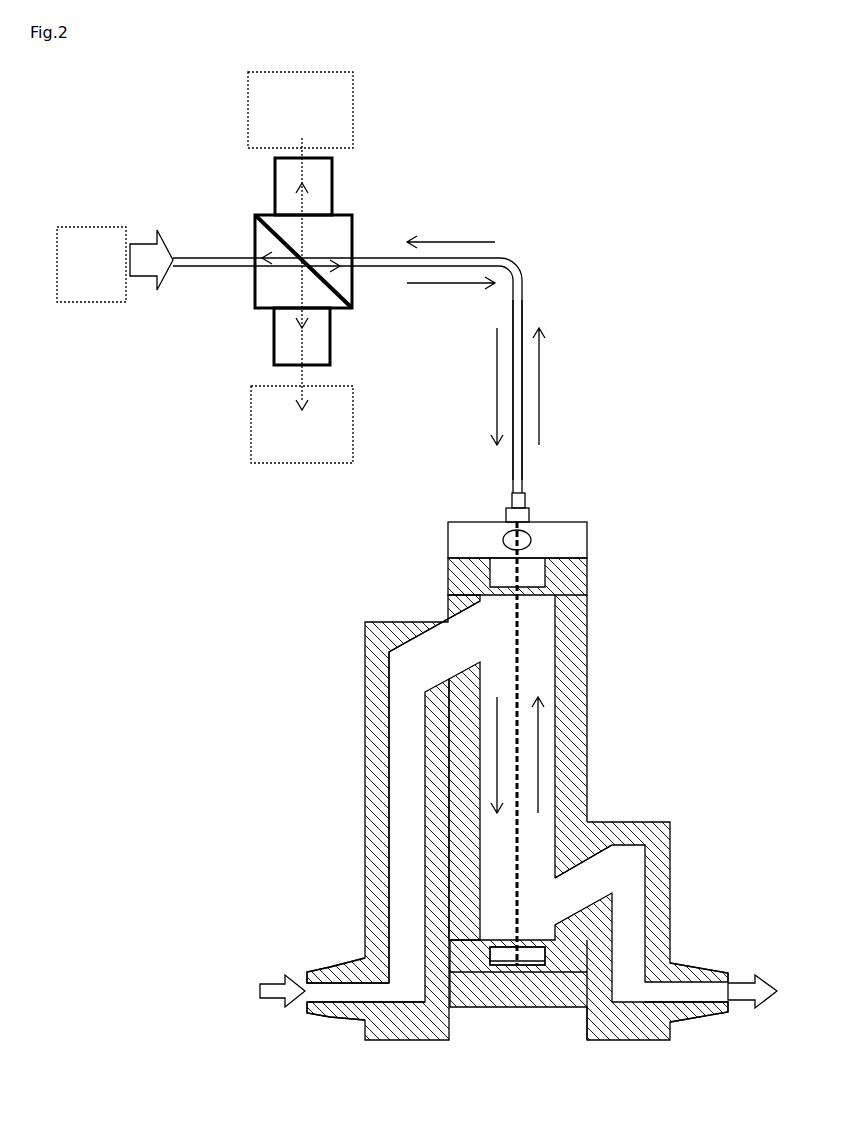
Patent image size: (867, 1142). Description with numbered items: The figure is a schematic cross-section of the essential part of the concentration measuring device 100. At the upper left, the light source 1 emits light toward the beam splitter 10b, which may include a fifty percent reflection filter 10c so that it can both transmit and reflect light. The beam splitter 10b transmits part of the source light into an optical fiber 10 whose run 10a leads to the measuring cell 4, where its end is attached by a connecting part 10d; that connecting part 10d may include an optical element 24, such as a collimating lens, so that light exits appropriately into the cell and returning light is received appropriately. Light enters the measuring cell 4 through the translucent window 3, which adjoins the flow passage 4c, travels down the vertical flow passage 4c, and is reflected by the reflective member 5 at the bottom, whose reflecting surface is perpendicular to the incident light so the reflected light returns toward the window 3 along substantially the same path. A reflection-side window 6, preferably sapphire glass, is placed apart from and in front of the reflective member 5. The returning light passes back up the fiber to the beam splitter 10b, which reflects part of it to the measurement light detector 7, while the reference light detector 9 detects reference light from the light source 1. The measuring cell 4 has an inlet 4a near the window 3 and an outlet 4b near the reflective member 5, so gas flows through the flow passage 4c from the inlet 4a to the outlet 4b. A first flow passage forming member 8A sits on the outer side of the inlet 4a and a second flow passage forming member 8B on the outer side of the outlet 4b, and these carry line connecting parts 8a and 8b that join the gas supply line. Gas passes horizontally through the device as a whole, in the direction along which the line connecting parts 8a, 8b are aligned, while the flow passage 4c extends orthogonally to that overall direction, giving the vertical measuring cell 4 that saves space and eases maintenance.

The light source 1 is at (93, 303).
The measurement light detector 7 is at (353, 93).
The reference light detector 9 is at (295, 465).
The optical fiber 10 is at (518, 262).
The optical fiber 10a is at (524, 302).
The beam splitter 10b is at (353, 212).
The 50% reflection filter 10c is at (352, 298).
The connecting part 10d is at (530, 507).
The concentration measuring device 100 is at (676, 242).
The optical element 24 is at (510, 547).
The translucent window 3 is at (543, 587).
The measuring cell 4 is at (588, 640).
The inlet 4a is at (478, 638).
The outlet 4b is at (550, 898).
The flow passage 4c is at (533, 677).
The reflective member 5 is at (507, 973).
The reflection-side window 6 is at (540, 973).
The first flow passage forming member 8A is at (365, 830).
The second flow passage forming member 8B is at (670, 822).
The line connecting part 8a is at (320, 967).
The line connecting part 8b is at (703, 967).